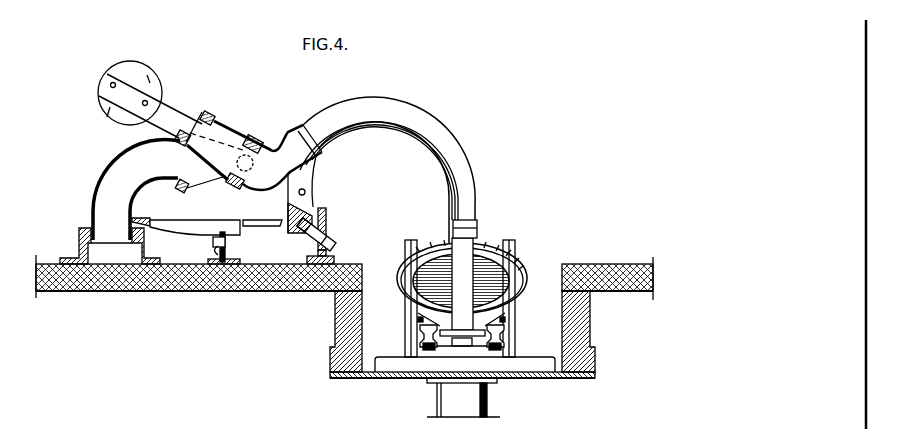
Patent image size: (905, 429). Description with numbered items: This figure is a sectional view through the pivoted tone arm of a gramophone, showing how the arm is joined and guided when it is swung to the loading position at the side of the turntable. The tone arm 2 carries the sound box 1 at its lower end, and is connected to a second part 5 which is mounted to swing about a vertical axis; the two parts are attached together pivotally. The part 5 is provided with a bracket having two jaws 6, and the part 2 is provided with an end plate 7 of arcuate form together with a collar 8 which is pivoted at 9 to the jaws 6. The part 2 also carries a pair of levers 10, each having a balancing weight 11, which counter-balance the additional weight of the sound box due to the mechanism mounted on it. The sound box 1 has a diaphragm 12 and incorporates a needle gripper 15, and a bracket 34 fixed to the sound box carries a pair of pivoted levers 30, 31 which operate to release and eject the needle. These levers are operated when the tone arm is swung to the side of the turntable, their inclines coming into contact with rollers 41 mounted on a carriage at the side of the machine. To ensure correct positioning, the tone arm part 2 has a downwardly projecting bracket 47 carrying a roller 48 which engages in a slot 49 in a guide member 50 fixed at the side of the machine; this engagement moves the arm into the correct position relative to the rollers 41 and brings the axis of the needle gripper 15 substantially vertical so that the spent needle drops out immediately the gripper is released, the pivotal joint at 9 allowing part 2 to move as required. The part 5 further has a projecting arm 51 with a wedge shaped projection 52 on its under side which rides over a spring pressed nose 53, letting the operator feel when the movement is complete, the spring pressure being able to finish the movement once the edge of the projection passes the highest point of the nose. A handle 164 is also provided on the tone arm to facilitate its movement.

The sound box 1 is at (445, 257).
The tone arm 2 is at (337, 117).
The second part of tone arm 5 is at (115, 183).
The jaws 6 is at (220, 172).
The end plate 7 is at (211, 115).
The collar 8 is at (255, 137).
The pivot 9 is at (246, 189).
The levers 10 is at (168, 107).
The balancing weight 11 is at (102, 93).
The diaphragm 12 is at (413, 286).
The needle gripper 15 is at (463, 346).
The lever 30 is at (430, 346).
The lever 31 is at (488, 346).
The bracket 34 is at (480, 257).
The rollers 41 is at (420, 334).
The bracket 47 is at (312, 175).
The roller 48 is at (334, 238).
The slot 49 is at (326, 222).
The guide member 50 is at (325, 208).
The projecting arm 51 is at (204, 223).
The wedge shaped projection 52 is at (238, 235).
The spring pressed nose 53 is at (213, 238).
The handle 164 is at (472, 225).